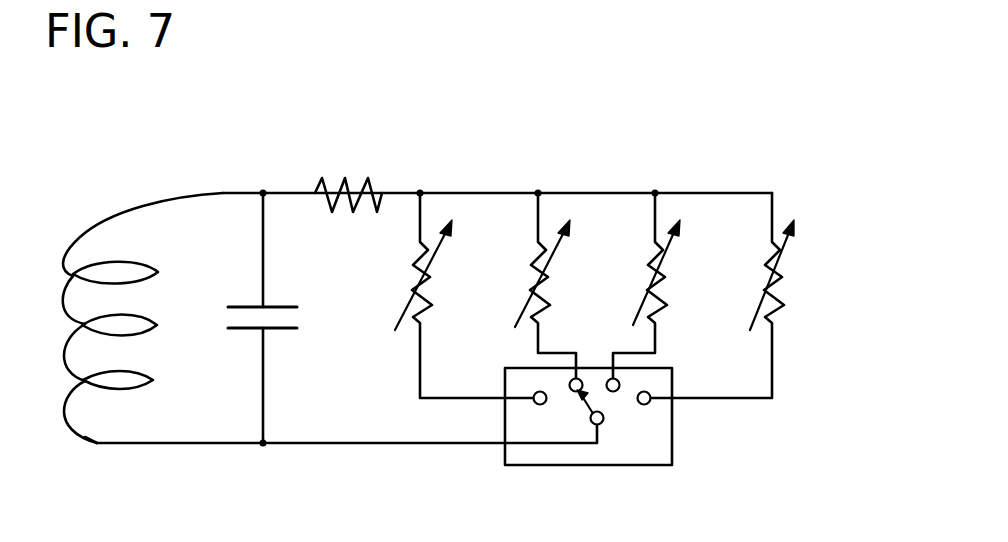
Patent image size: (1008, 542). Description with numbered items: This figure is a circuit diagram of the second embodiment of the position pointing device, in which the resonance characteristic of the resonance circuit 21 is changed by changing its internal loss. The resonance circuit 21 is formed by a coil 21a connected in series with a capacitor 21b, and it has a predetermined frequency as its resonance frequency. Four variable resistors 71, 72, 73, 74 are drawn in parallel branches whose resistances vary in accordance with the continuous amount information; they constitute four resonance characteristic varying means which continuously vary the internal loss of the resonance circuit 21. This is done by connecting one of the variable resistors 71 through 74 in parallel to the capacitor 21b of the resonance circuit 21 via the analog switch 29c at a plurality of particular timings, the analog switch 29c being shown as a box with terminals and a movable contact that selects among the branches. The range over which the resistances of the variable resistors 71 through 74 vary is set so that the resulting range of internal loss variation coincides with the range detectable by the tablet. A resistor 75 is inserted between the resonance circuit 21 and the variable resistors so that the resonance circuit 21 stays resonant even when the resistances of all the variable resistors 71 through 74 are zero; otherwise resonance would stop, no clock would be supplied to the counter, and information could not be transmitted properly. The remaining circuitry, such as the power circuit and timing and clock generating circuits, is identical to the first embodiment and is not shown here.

The resonance circuit 21 is at (136, 189).
The coil 21a is at (85, 437).
The capacitor 21b is at (247, 330).
The resistor 75 is at (352, 183).
The variable resistor 71 is at (433, 303).
The variable resistor 72 is at (540, 304).
The variable resistor 73 is at (670, 303).
The variable resistor 74 is at (780, 277).
The analog switch 29c is at (672, 428).